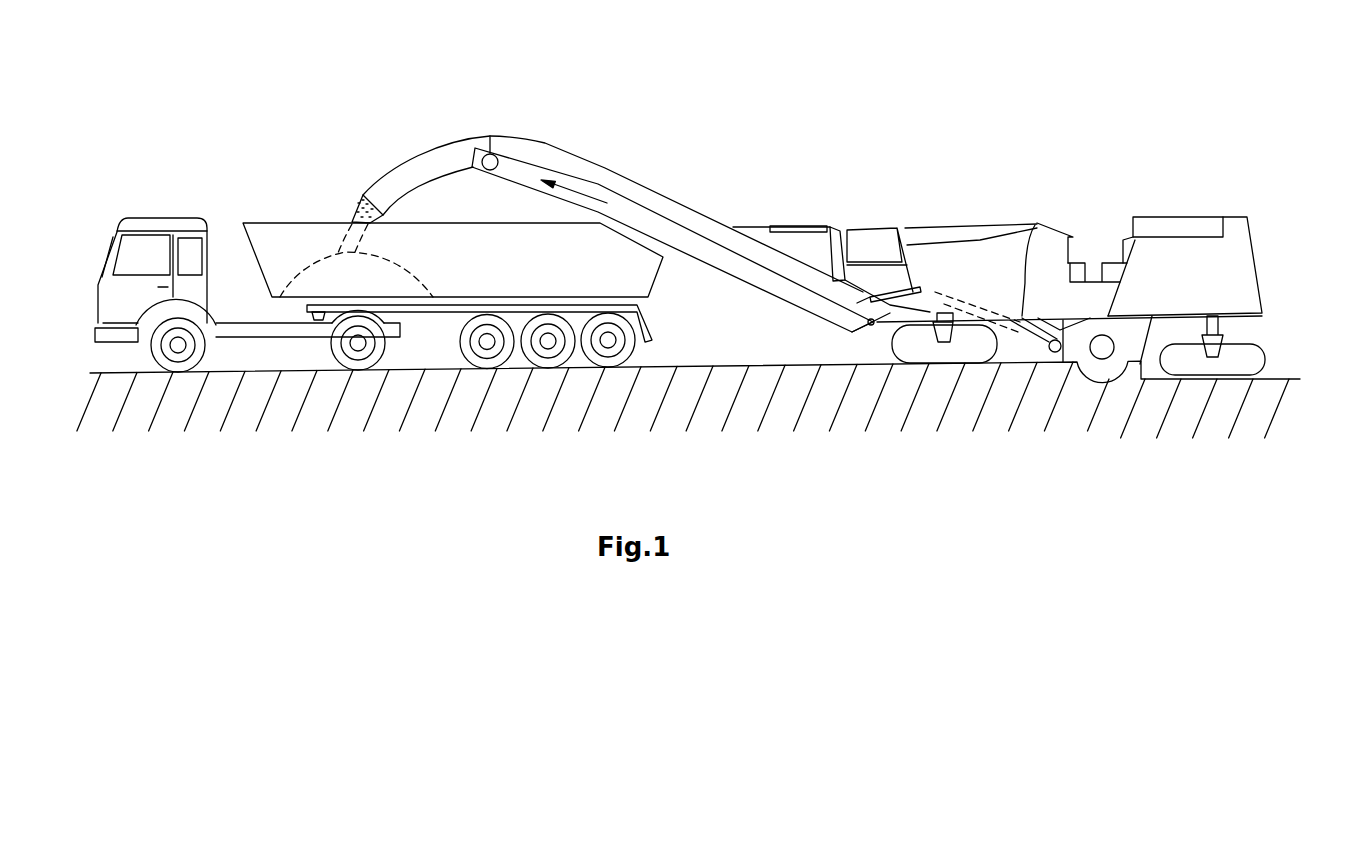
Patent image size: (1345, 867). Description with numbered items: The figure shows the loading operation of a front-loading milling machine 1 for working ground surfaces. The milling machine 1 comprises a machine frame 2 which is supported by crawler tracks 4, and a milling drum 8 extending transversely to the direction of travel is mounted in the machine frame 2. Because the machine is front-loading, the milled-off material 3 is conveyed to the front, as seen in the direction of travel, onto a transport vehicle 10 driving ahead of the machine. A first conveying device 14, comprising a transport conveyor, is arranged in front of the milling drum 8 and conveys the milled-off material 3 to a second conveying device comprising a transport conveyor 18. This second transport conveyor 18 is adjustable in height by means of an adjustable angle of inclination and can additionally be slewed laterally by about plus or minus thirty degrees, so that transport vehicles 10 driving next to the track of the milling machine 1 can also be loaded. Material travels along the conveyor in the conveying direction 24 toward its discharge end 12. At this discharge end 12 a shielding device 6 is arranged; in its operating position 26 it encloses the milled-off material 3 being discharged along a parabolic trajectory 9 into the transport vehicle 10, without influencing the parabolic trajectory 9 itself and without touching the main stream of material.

The milling machine 1 is at (1003, 188).
The machine frame 2 is at (1237, 253).
The milled-off material 3 is at (346, 203).
The crawler tracks 4 is at (1252, 360).
The shielding device 6 is at (386, 137).
The milling drum 8 is at (1101, 368).
The parabolic trajectory 9 is at (337, 212).
The transport vehicle 10 is at (278, 177).
The discharge end 12 is at (531, 86).
The first conveying device 14 is at (1036, 226).
The transport conveyor 18 is at (613, 180).
The conveying direction 24 is at (580, 197).
The operating position 26 is at (437, 125).